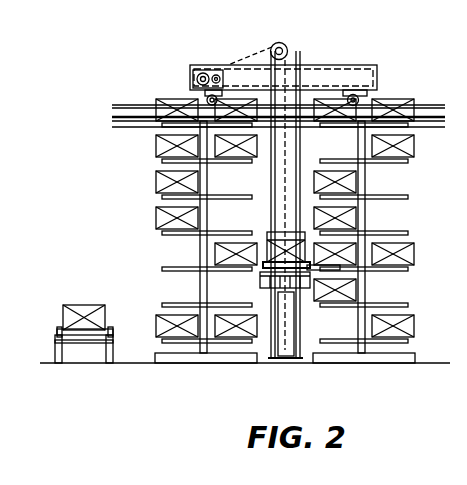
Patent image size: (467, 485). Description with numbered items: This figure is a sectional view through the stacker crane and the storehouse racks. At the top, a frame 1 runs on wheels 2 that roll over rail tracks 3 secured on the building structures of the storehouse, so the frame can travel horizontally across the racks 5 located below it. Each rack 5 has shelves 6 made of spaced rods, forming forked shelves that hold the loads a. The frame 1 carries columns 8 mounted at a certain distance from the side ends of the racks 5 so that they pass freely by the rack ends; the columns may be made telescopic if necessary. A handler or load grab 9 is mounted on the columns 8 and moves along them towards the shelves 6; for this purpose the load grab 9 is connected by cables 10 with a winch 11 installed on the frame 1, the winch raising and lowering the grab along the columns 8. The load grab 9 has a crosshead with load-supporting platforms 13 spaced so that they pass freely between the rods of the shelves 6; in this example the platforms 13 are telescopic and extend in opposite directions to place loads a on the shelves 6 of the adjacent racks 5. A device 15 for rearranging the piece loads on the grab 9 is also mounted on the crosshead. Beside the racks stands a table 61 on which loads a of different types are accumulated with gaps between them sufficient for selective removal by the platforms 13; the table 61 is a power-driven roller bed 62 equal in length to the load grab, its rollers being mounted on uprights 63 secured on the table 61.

The frame 1 is at (376, 68).
The wheels 2 is at (360, 98).
The rail tracks 3 is at (418, 107).
The racks 5 is at (200, 245).
The shelves 6 is at (158, 233).
The columns 8 is at (286, 346).
The load grab 9 is at (284, 297).
The cables 10 is at (288, 50).
The winch 11 is at (209, 72).
The load-supporting platforms 13 is at (313, 259).
The device for rearranging piece loads 15 is at (255, 275).
The table 61 is at (96, 360).
The roller bed 62 is at (67, 352).
The uprights 63 is at (58, 331).
The loads a is at (409, 146).